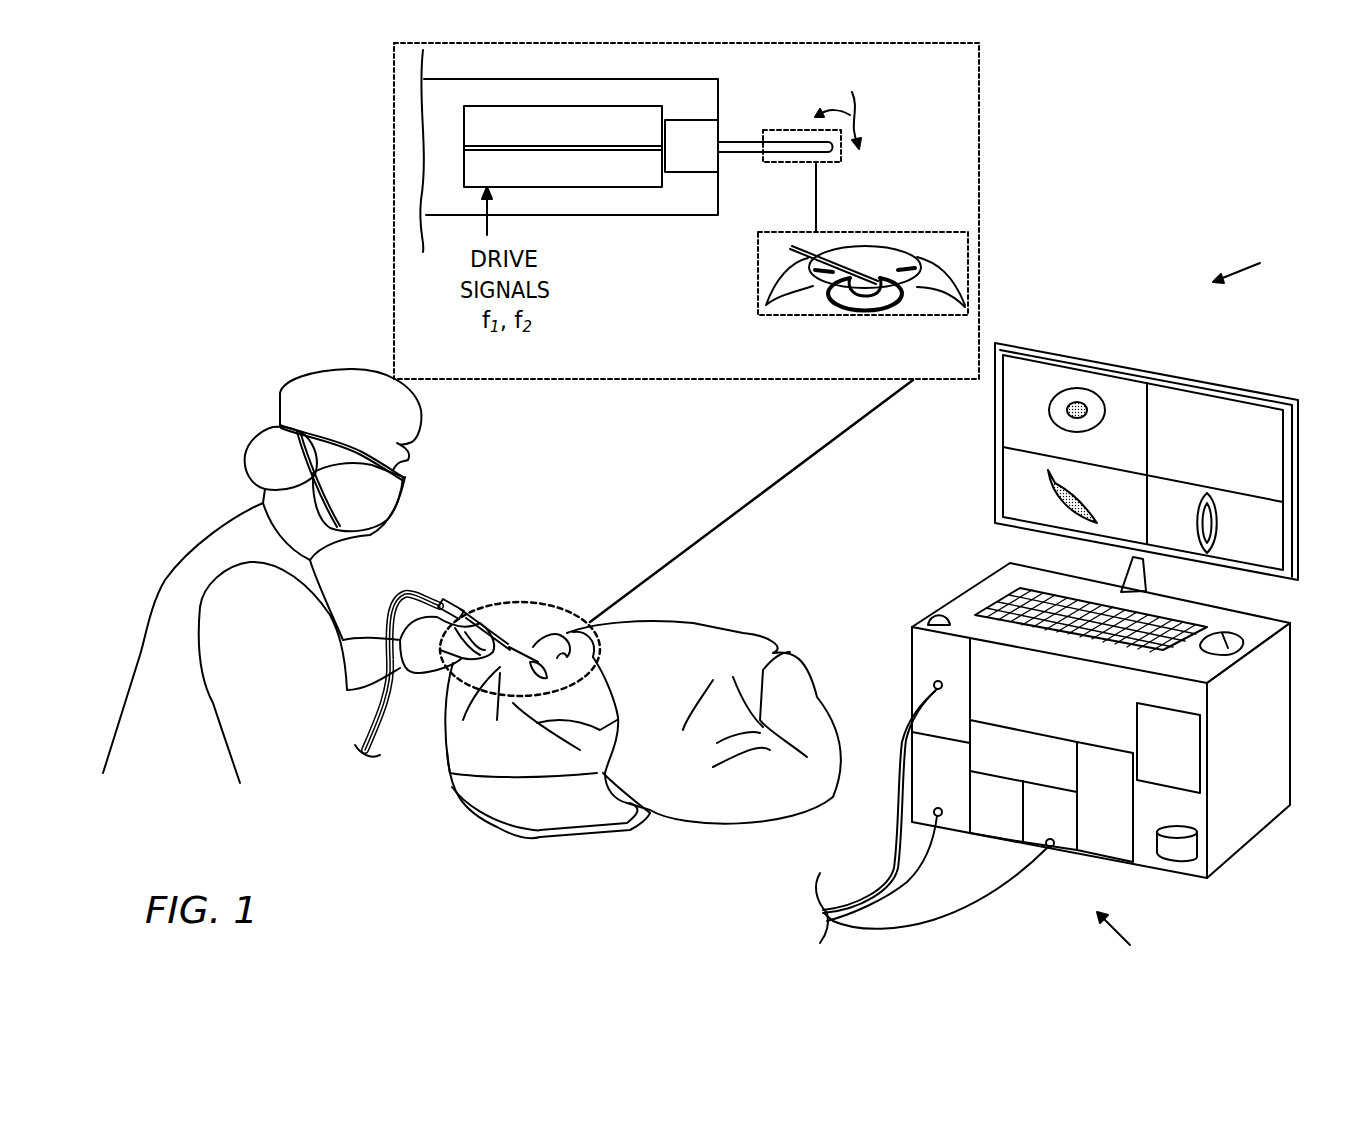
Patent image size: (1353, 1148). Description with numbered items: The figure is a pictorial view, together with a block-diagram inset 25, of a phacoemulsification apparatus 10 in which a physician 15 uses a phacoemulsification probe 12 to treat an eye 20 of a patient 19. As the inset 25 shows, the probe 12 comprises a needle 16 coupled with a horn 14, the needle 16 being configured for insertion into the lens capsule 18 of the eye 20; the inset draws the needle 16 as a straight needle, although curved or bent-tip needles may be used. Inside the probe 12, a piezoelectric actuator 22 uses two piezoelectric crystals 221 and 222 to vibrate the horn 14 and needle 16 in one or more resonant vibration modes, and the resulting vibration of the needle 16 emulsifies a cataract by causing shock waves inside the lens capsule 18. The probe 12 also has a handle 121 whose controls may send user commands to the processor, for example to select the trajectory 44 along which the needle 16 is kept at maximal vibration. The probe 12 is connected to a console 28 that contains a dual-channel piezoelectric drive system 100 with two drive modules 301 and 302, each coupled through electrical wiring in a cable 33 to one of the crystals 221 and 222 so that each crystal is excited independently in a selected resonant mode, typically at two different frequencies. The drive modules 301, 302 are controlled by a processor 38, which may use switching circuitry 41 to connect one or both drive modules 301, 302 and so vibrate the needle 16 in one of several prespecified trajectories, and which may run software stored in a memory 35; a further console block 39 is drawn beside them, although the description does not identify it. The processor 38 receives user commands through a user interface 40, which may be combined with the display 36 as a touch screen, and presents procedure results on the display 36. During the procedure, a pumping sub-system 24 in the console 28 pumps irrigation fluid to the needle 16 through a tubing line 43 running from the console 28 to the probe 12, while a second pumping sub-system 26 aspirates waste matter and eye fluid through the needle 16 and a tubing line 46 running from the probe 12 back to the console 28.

The phacoemulsification apparatus 10 is at (1251, 266).
The phacoemulsification probe 12 is at (719, 96).
The horn 14 is at (704, 160).
The physician 15 is at (278, 425).
The needle 16 is at (779, 162).
The lens capsule 18 is at (832, 312).
The patient 19 is at (530, 763).
The eye 20 is at (950, 275).
The piezoelectric actuator 22 is at (480, 106).
The piezoelectric crystal 221 is at (520, 139).
The piezoelectric crystal 222 is at (520, 182).
The pumping sub-system 24 is at (952, 665).
The inset 25 is at (427, 372).
The pumping sub-system 26 is at (952, 780).
The console 28 is at (1252, 827).
The drive module 301 is at (1004, 820).
The drive module 302 is at (1059, 829).
The cable 33 is at (1010, 884).
The memory 35 is at (1180, 860).
The display 36 is at (995, 398).
The processor 38 is at (1184, 763).
The memory 39 is at (1120, 815).
The user interface 40 is at (953, 578).
The switching circuitry 41 is at (1024, 773).
The tubing line 43 is at (823, 903).
The trajectory 44 is at (842, 103).
The tubing line 46 is at (933, 843).
The dual-channel piezoelectric drive system 100 is at (1135, 939).
The handle 121 is at (448, 596).